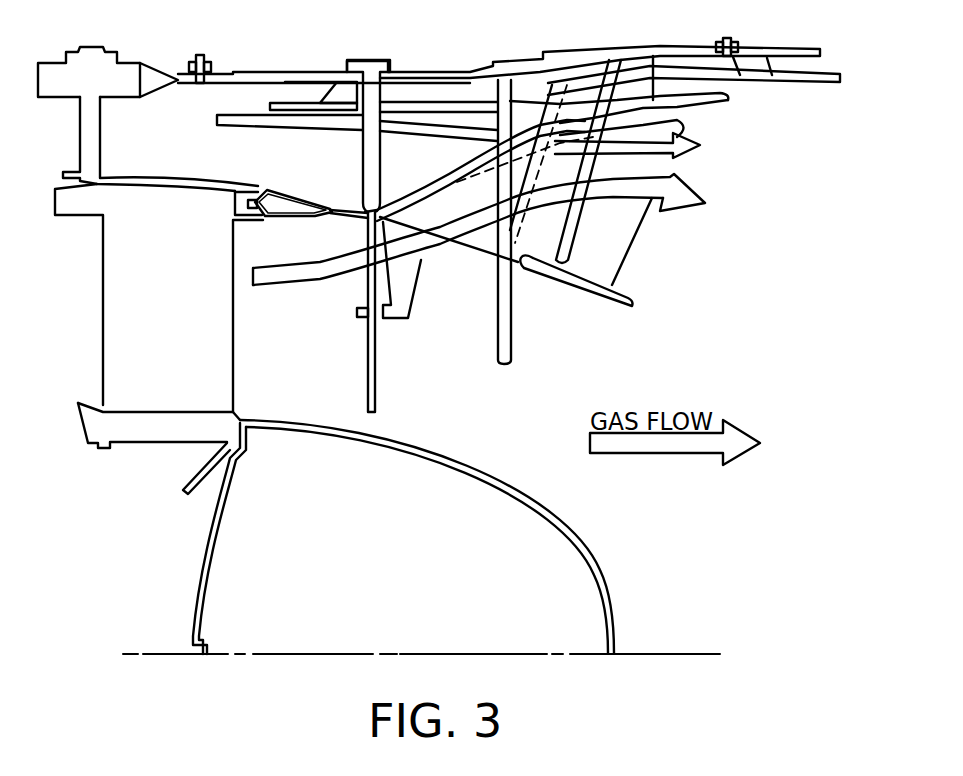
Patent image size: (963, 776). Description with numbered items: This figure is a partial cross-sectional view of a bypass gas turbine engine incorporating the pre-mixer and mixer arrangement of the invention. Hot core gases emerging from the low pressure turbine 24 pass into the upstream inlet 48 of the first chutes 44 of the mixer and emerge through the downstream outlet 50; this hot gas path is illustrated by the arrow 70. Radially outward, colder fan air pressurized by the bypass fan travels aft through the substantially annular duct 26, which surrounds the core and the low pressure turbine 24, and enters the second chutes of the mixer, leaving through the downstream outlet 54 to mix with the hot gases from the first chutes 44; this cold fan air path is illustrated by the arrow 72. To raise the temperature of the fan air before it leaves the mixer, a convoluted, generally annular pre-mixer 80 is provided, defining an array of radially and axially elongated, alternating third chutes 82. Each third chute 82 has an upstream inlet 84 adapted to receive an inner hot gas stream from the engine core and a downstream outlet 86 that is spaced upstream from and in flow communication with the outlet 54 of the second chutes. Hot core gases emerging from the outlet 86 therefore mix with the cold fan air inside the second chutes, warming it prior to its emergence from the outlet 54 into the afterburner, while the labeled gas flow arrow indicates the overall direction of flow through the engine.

The low pressure turbine 24 is at (233, 362).
The annular duct 26 is at (175, 141).
The first chutes 44 is at (657, 160).
The upstream inlet 48 is at (468, 255).
The downstream outlet 50 is at (631, 241).
The downstream outlet 54 is at (608, 258).
The arrow 70 is at (333, 278).
The arrow 72 is at (237, 113).
The pre-mixer 80 is at (458, 153).
The third chutes 82 is at (450, 182).
The upstream inlet 84 is at (380, 234).
The downstream outlet 86 is at (603, 168).